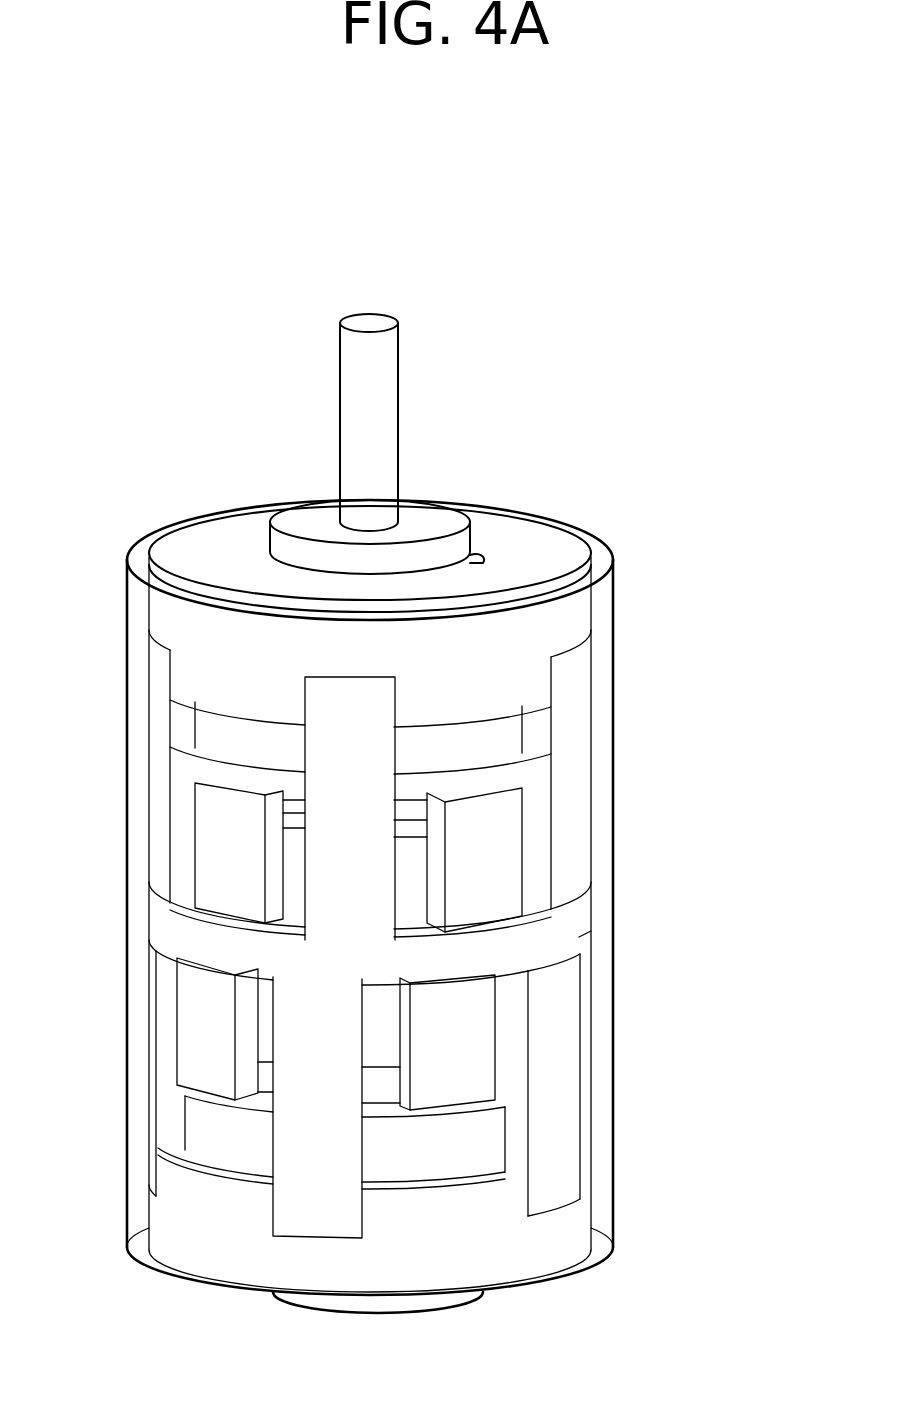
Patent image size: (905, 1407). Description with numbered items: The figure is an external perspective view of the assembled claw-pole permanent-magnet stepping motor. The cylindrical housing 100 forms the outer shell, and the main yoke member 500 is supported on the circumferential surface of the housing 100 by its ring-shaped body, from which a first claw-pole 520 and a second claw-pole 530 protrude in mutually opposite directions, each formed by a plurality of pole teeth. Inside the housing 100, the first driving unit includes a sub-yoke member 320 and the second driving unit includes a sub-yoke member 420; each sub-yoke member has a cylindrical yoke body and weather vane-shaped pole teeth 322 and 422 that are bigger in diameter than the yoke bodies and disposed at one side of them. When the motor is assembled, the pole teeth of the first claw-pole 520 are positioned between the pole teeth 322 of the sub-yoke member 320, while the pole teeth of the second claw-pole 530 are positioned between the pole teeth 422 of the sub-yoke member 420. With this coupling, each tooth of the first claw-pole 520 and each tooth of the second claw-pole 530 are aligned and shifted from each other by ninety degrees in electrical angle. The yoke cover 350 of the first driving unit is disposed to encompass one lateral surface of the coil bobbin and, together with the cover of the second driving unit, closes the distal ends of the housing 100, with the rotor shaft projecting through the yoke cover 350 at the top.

The housing 100 is at (600, 568).
The yoke cover 350 is at (568, 548).
The sub-yoke member 320 is at (540, 817).
The pole teeth 322 is at (232, 836).
The sub-yoke member 420 is at (503, 1070).
The pole teeth 422 is at (213, 1030).
The main yoke member 500 is at (538, 938).
The first claw-pole 520 is at (567, 867).
The second claw-pole 530 is at (565, 1020).